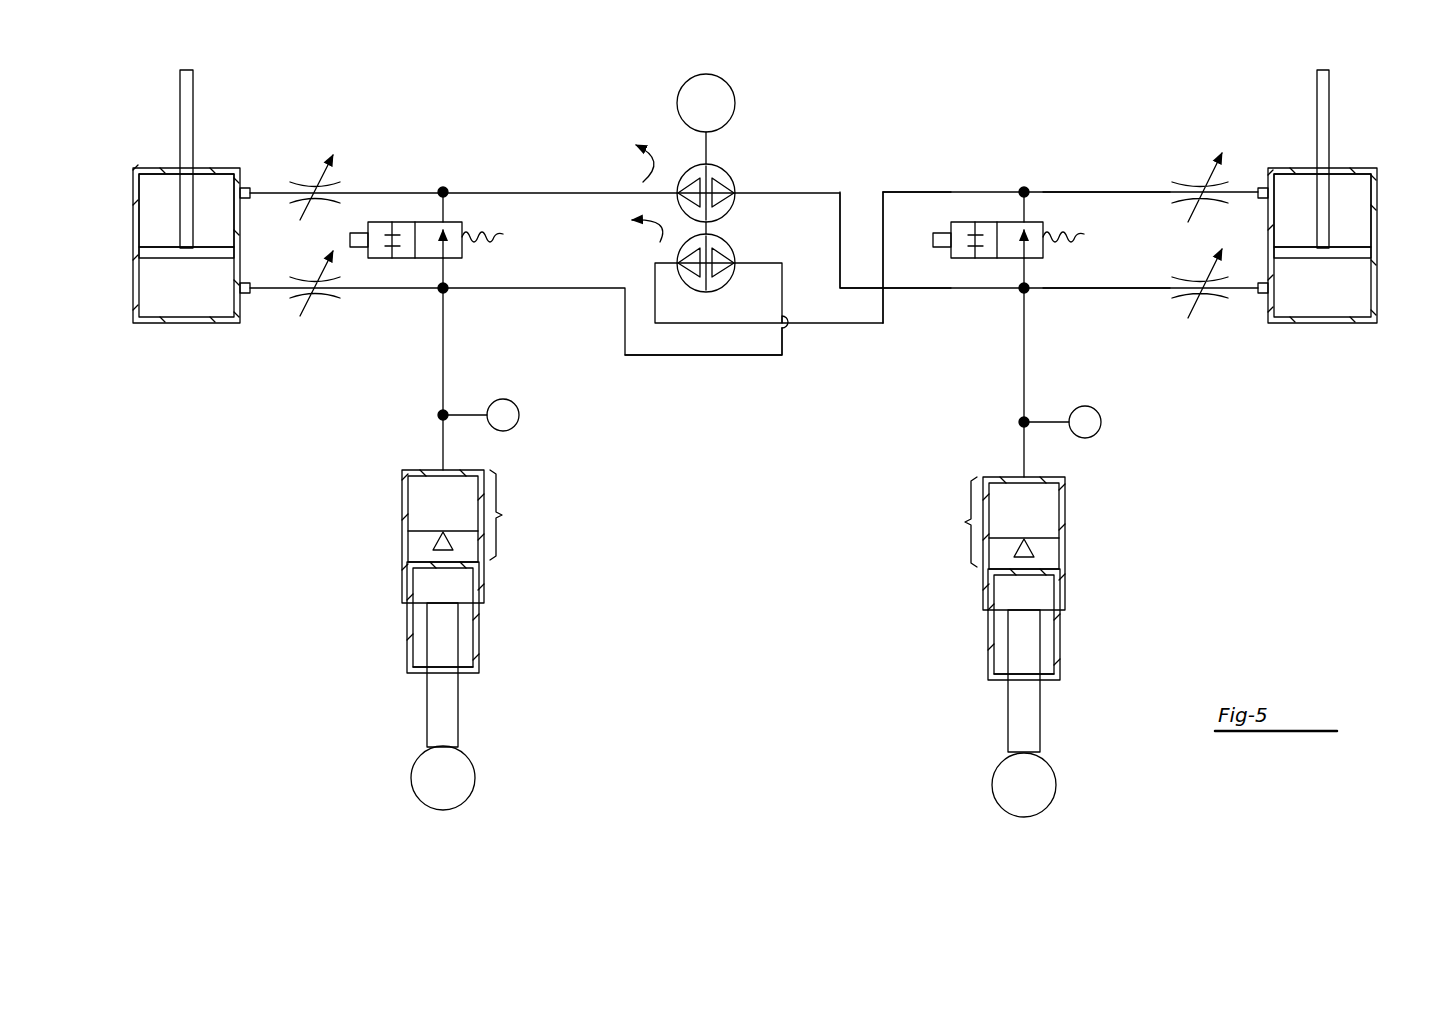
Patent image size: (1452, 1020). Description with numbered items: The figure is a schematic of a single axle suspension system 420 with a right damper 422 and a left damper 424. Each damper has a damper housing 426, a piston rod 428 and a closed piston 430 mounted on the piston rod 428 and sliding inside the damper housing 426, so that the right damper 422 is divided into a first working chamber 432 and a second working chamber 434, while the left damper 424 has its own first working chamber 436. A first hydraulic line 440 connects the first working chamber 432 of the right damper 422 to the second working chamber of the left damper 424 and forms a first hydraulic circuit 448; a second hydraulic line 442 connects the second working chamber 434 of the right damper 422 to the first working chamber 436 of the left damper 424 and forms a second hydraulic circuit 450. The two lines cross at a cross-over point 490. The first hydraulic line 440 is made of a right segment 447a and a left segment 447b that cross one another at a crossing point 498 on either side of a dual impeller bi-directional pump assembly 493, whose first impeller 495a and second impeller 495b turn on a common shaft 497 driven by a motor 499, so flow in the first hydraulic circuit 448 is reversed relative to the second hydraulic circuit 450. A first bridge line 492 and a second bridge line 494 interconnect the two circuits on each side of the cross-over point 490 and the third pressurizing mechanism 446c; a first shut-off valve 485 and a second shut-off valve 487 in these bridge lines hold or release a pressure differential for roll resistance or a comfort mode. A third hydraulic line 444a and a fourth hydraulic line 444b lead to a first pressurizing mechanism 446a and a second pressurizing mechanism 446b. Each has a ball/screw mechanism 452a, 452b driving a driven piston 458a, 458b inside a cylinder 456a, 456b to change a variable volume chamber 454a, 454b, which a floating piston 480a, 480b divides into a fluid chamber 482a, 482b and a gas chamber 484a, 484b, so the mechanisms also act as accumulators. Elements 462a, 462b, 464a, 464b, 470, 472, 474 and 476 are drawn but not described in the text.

The single axle suspension system 420 is at (273, 538).
The right damper 422 is at (1366, 150).
The left damper 424 is at (148, 148).
The damper housing 426 is at (137, 288).
The piston rod 428 is at (180, 78).
The piston 430 is at (160, 256).
The first working chamber 432 is at (1355, 213).
The second working chamber 434 is at (153, 305).
The first working chamber 436 is at (162, 213).
The first hydraulic line 440 is at (1127, 190).
The second hydraulic line 442 is at (1093, 290).
The third hydraulic line 444a is at (440, 366).
The fourth hydraulic line 444b is at (1020, 444).
The first pressurizing mechanism 446a is at (562, 476).
The second pressurizing mechanism 446b is at (962, 628).
The third pressurizing mechanism 446c is at (745, 148).
The right segment 447a is at (945, 190).
The left segment 447b is at (520, 290).
The first hydraulic circuit 448 is at (900, 185).
The second hydraulic circuit 450 is at (906, 296).
The ball/screw mechanism 452a is at (435, 718).
The ball/screw mechanism 452b is at (1032, 725).
The variable volume chamber 454a is at (526, 515).
The variable volume chamber 454b is at (947, 522).
The cylinder 456a is at (405, 585).
The cylinder 456b is at (1066, 590).
The driven piston 458a is at (415, 664).
The driven piston 458b is at (1062, 668).
The first ball joint 462a is at (423, 778).
The second ball joint 462b is at (1043, 784).
The first accumulator 464a is at (505, 400).
The second accumulator 464b is at (1088, 408).
The second compression flow restrictor 470 is at (1185, 185).
The first rebound flow restrictor 472 is at (290, 298).
The second rebound flow restrictor 474 is at (1222, 298).
The first compression flow restrictor 476 is at (300, 185).
The floating piston 480a is at (424, 531).
The floating piston 480b is at (1042, 538).
The fluid chamber 482a is at (424, 500).
The fluid chamber 482b is at (1045, 505).
The gas chamber 484a is at (418, 542).
The gas chamber 484b is at (1050, 548).
The first shut-off valve 485 is at (1013, 225).
The second shut-off valve 487 is at (392, 225).
The cross-over point 490 is at (879, 285).
The first bridge line 492 is at (1028, 206).
The dual impeller bi-directional pump assembly 493 is at (672, 218).
The second bridge line 494 is at (447, 206).
The first impeller 495a is at (732, 250).
The second impeller 495b is at (726, 172).
The common shaft 497 is at (703, 150).
The crossing point 498 is at (789, 336).
The motor 499 is at (710, 87).